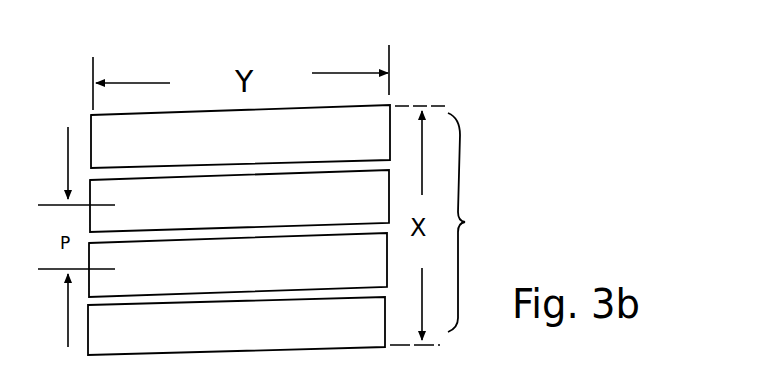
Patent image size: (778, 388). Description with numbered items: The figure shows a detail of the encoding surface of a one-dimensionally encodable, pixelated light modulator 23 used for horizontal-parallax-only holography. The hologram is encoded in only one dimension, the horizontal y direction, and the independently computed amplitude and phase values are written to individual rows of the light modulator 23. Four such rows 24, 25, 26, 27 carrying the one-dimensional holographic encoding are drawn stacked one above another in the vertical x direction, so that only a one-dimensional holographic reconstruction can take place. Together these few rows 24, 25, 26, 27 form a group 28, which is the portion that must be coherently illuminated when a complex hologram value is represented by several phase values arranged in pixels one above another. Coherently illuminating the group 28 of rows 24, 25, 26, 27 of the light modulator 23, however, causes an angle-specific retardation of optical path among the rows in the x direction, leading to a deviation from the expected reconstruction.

The light modulator 23 is at (473, 81).
The row of the light modulator 24 is at (240, 136).
The row of the light modulator 25 is at (239, 201).
The row of the light modulator 26 is at (238, 265).
The row of the light modulator 27 is at (236, 326).
The group of rows 28 is at (475, 224).